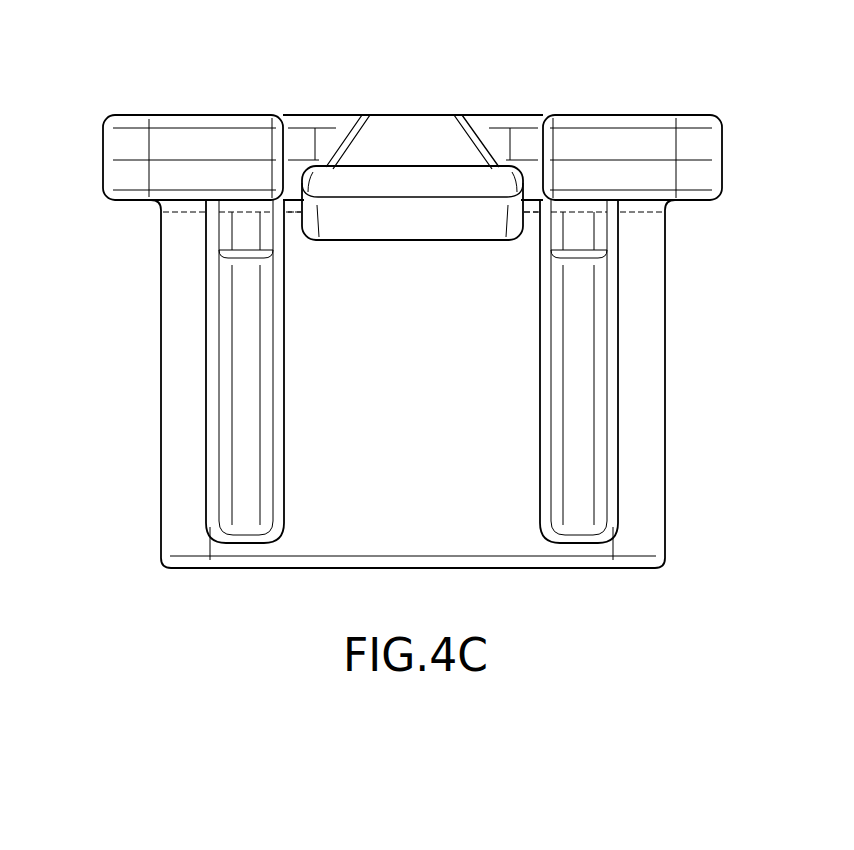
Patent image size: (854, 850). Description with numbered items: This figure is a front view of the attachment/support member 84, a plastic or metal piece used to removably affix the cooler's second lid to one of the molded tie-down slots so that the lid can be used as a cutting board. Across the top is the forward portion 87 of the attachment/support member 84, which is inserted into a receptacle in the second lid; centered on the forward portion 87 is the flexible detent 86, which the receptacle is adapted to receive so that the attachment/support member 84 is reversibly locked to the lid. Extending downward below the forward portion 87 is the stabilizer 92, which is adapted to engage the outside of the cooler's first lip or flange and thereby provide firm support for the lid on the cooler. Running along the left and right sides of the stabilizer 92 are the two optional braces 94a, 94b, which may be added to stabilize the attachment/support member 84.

The attachment/support member 84 is at (504, 108).
The forward portion 87 is at (185, 146).
The flexible detent 86 is at (386, 244).
The stabilizer 92 is at (423, 413).
The brace 94a is at (250, 414).
The brace 94b is at (588, 384).